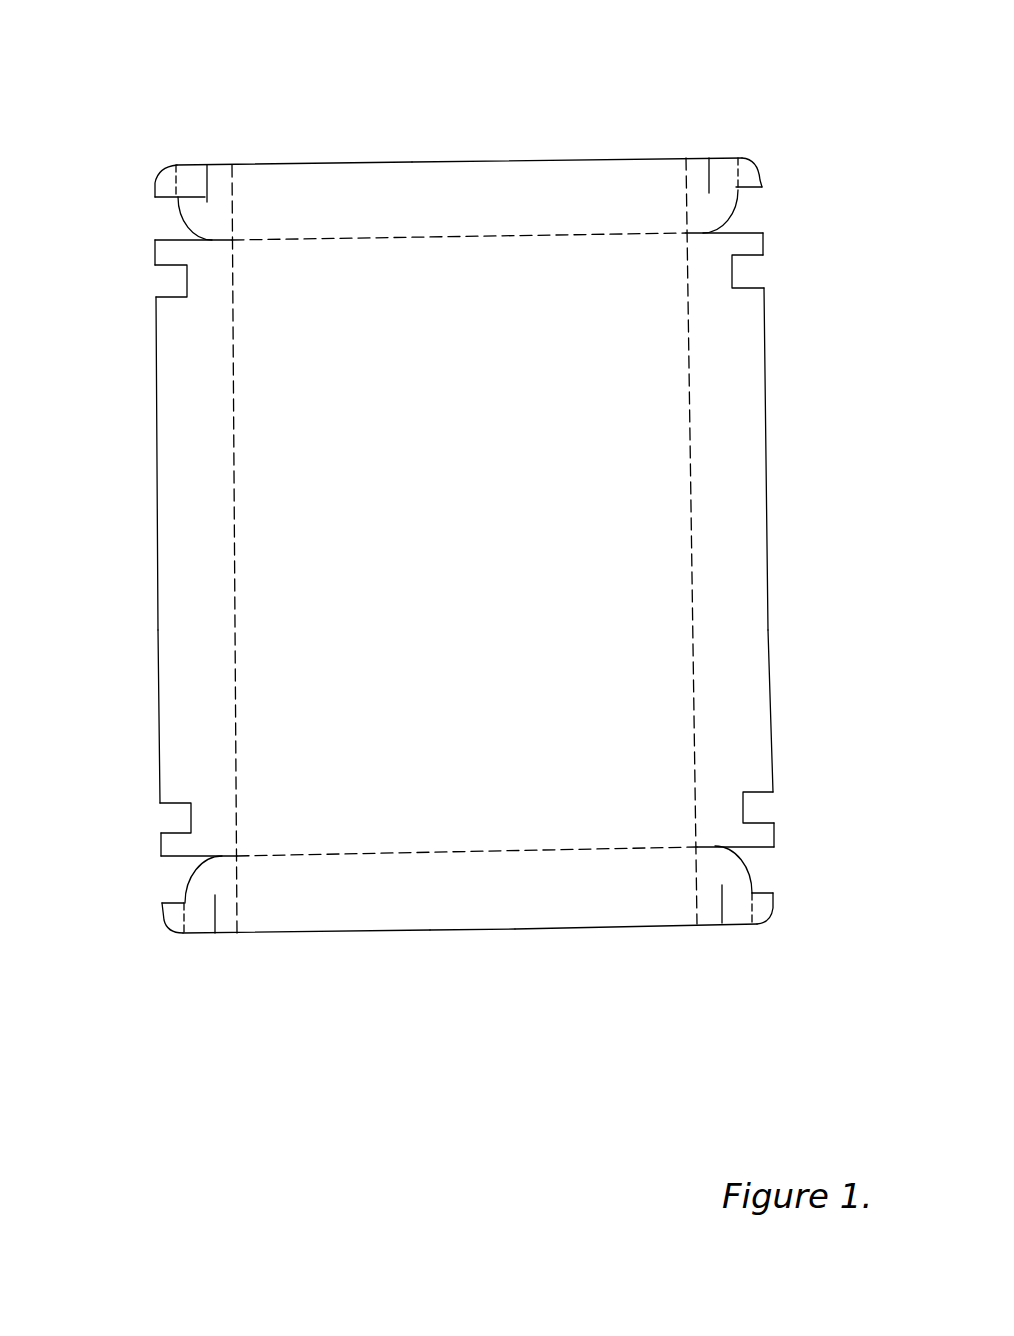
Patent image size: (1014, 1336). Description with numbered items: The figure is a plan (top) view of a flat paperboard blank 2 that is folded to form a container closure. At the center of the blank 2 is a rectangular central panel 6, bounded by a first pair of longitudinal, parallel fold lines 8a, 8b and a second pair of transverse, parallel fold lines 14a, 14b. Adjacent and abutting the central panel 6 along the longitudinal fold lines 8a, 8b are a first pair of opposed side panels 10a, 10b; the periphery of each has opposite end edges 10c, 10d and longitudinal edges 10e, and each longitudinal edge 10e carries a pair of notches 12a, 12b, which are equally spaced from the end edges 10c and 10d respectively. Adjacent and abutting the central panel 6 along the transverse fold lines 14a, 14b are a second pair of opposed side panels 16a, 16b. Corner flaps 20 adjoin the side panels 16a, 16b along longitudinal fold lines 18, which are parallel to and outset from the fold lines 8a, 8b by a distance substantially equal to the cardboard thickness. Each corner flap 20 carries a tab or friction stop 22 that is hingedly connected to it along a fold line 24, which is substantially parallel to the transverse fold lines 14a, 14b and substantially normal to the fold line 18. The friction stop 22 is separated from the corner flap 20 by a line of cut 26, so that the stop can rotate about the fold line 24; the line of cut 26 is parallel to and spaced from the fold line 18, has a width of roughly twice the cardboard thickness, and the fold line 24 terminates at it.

The blank 2 is at (393, 965).
The central panel 6 is at (530, 378).
The longitudinal fold line 8a is at (222, 465).
The longitudinal fold line 8b is at (693, 430).
The side panel 10a is at (185, 572).
The side panel 10b is at (732, 505).
The end edge 10c is at (172, 242).
The end edge 10d is at (177, 860).
The longitudinal edge 10e is at (160, 667).
The notch 12a is at (180, 282).
The notch 12b is at (178, 817).
The transverse fold line 14a is at (470, 228).
The transverse fold line 14b is at (476, 860).
The side panel 16a is at (378, 195).
The side panel 16b is at (548, 895).
The fold line 18 is at (232, 190).
The corner flap 20 is at (197, 217).
The friction stop 22 is at (165, 187).
The fold line 24 is at (193, 193).
The line of cut 26 is at (207, 163).